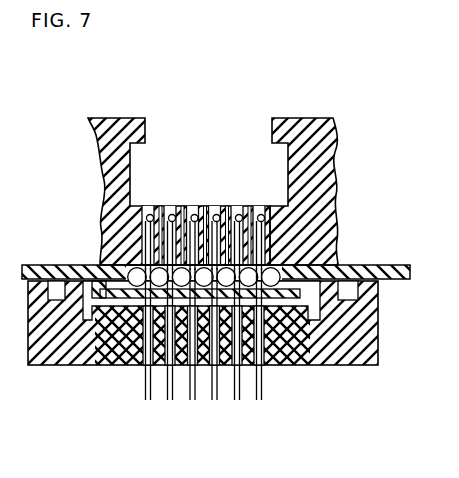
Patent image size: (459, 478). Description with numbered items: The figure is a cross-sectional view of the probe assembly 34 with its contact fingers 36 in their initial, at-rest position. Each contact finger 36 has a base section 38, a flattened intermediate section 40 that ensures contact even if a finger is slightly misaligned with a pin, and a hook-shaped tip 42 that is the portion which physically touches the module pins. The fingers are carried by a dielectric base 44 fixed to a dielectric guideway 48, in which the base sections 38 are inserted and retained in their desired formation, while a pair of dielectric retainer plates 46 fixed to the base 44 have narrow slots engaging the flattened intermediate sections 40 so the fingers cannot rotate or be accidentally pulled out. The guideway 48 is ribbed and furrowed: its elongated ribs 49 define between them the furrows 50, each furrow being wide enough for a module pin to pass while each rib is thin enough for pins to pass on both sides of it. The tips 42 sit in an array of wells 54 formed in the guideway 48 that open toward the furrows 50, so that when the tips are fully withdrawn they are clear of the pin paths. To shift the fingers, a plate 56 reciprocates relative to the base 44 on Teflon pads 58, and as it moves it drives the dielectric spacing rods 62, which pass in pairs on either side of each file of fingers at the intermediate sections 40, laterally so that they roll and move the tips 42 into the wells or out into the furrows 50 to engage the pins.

The probe assembly 34 is at (222, 249).
The contact fingers 36 is at (224, 249).
The base section 38 is at (140, 350).
The intermediate section 40 is at (120, 340).
The tip 42 is at (203, 164).
The dielectric base 44 is at (372, 352).
The dielectric retainer plates 46 is at (312, 298).
The guideway 48 is at (220, 179).
The ribs 49 is at (186, 206).
The furrows 50 is at (223, 206).
The wells 54 is at (150, 238).
The plate 56 is at (412, 238).
The Teflon pads 58 is at (58, 292).
The dielectric spacing rods 62 is at (140, 270).